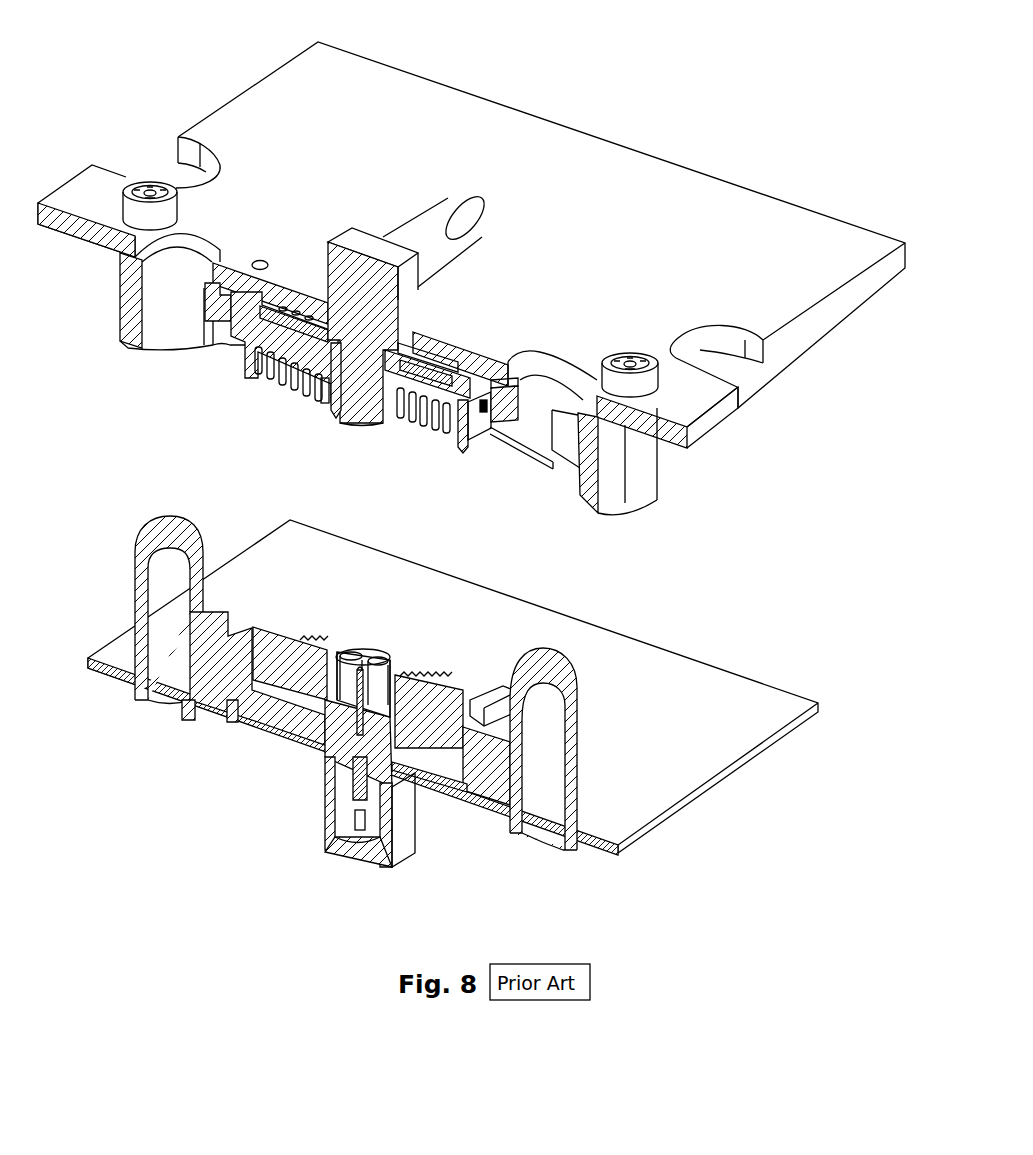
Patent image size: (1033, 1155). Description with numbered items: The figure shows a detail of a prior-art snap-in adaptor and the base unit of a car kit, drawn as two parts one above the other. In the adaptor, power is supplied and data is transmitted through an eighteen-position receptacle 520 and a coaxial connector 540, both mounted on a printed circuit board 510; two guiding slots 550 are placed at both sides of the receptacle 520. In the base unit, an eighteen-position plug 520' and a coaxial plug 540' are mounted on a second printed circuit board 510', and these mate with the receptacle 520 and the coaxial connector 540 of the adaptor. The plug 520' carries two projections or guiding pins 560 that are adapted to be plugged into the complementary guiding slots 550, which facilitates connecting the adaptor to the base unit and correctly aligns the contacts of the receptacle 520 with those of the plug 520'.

The printed circuit board 510 is at (471, 245).
The eighteen-position receptacle 520 is at (373, 329).
The coaxial connector 540 is at (299, 389).
The guiding slot 550 is at (155, 318).
The printed circuit board 510' is at (453, 687).
The eighteen-position plug 520' is at (335, 708).
The coaxial plug 540' is at (332, 758).
The guiding pin 560 is at (578, 718).